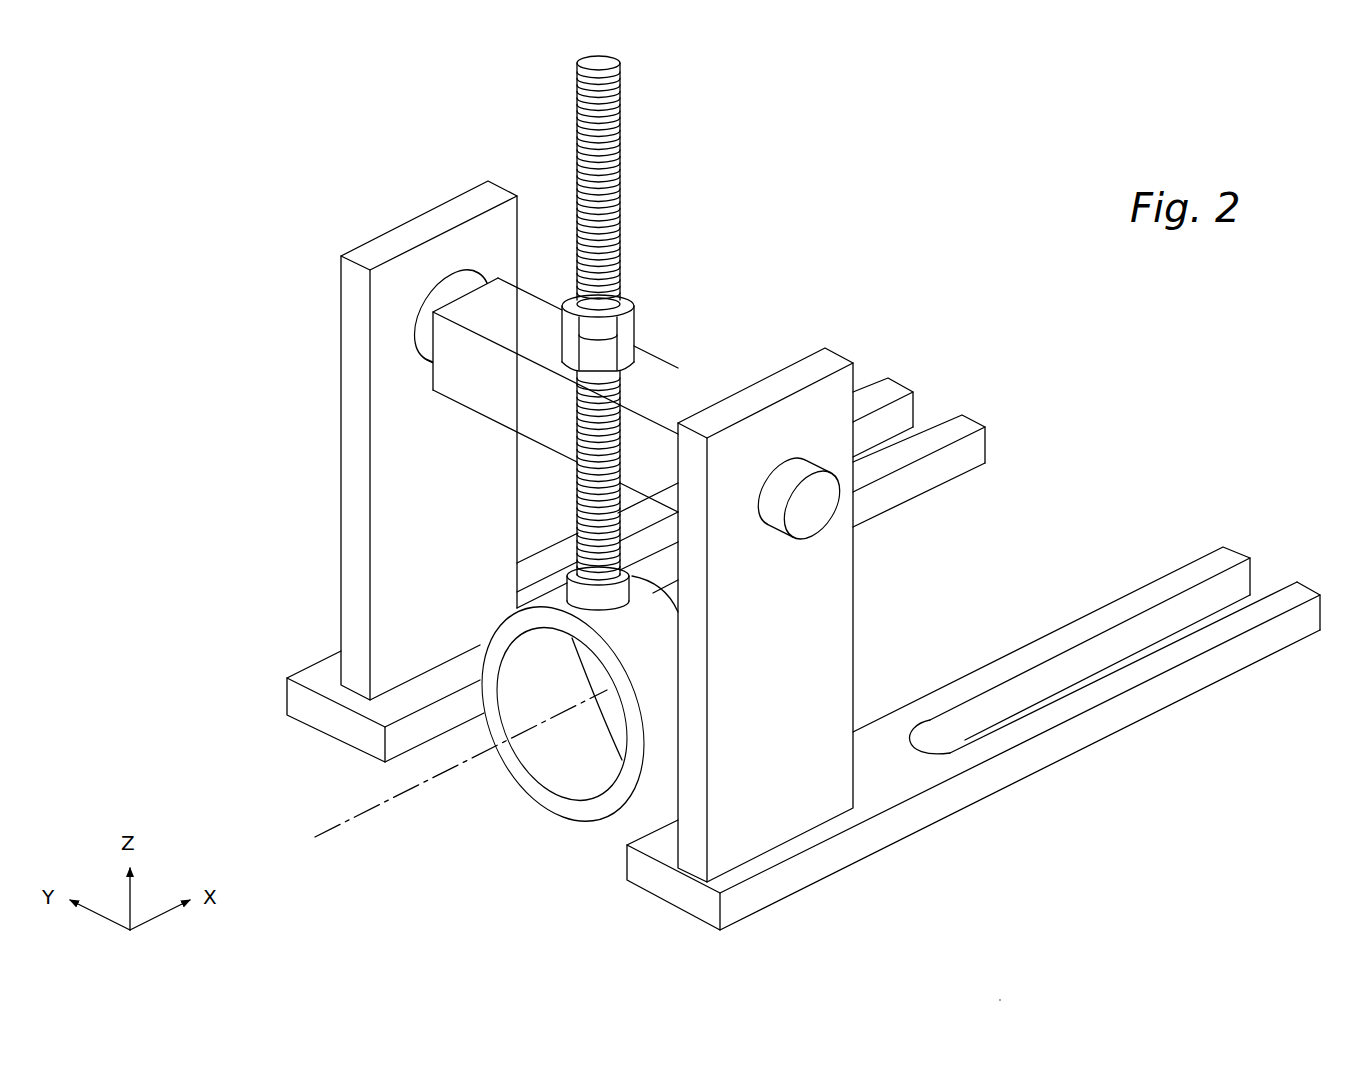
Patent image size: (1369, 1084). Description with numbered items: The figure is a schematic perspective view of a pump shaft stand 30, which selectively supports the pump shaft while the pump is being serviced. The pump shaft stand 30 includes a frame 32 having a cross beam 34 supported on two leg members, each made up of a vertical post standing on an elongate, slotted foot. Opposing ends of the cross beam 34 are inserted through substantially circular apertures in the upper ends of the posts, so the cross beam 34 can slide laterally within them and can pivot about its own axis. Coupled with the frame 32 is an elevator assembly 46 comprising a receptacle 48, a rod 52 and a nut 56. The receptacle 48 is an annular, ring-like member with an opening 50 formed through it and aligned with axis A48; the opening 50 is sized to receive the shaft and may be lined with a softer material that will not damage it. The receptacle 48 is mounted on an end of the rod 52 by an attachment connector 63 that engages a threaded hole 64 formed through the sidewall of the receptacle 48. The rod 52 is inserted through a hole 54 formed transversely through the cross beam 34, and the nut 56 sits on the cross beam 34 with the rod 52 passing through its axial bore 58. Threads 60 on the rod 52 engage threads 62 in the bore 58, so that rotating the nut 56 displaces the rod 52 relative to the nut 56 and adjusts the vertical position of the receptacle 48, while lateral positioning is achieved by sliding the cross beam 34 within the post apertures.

The pump shaft stand 30 is at (270, 137).
The frame 32 is at (362, 251).
The cross beam 34 is at (485, 407).
The elevator assembly 46 is at (656, 306).
The receptacle 48 is at (525, 780).
The opening 50 is at (578, 772).
The rod 52 is at (620, 130).
The hole 54 is at (578, 400).
The nut 56 is at (634, 338).
The axial bore 58 is at (600, 308).
The threads 60 is at (605, 185).
The threads 62 is at (575, 332).
The attachment connector 63 is at (617, 597).
The threaded hole 64 is at (600, 587).
The axis A48 is at (370, 815).